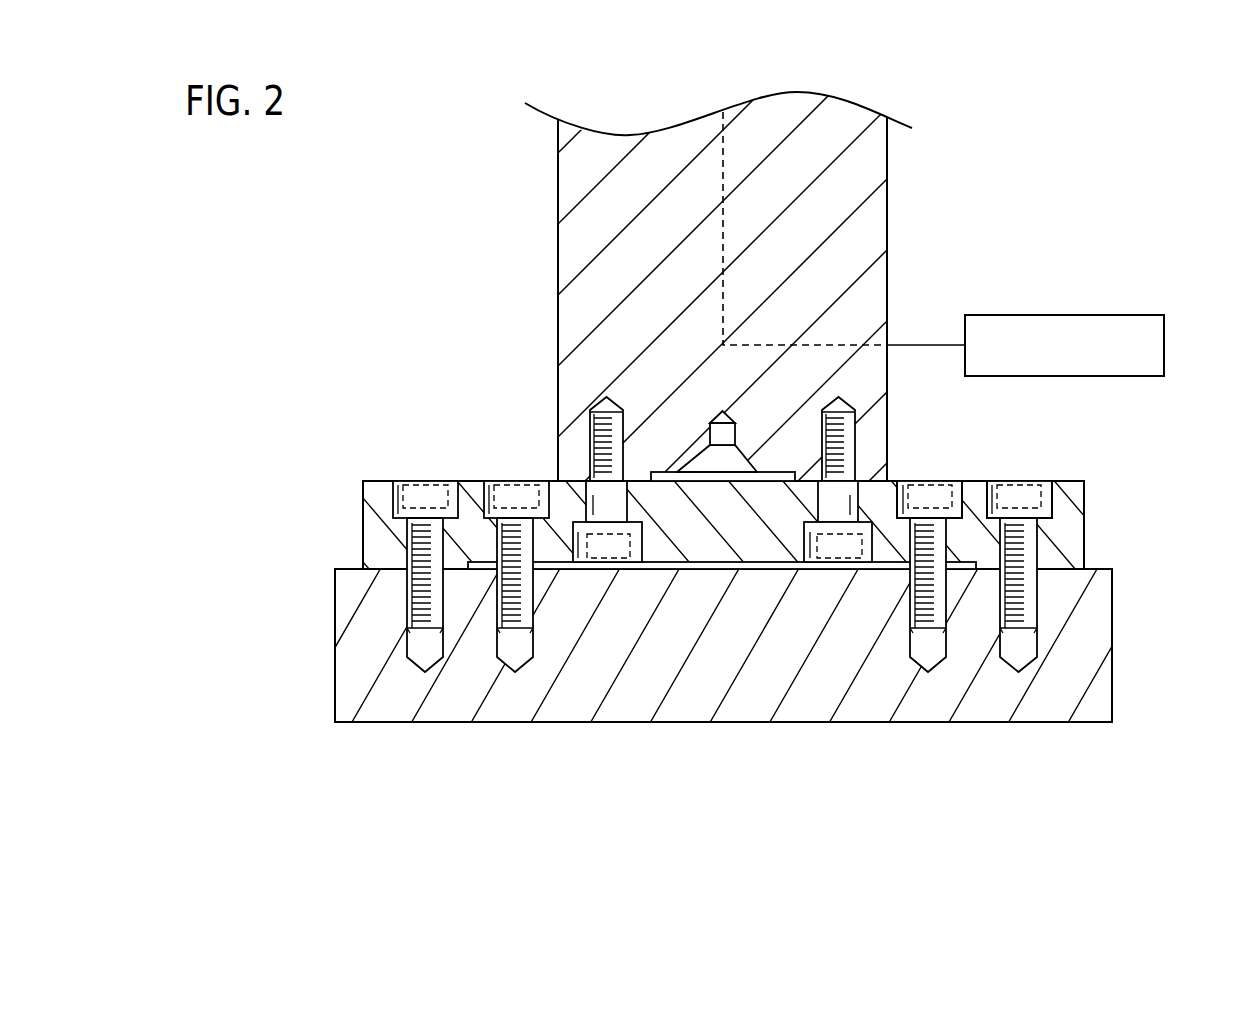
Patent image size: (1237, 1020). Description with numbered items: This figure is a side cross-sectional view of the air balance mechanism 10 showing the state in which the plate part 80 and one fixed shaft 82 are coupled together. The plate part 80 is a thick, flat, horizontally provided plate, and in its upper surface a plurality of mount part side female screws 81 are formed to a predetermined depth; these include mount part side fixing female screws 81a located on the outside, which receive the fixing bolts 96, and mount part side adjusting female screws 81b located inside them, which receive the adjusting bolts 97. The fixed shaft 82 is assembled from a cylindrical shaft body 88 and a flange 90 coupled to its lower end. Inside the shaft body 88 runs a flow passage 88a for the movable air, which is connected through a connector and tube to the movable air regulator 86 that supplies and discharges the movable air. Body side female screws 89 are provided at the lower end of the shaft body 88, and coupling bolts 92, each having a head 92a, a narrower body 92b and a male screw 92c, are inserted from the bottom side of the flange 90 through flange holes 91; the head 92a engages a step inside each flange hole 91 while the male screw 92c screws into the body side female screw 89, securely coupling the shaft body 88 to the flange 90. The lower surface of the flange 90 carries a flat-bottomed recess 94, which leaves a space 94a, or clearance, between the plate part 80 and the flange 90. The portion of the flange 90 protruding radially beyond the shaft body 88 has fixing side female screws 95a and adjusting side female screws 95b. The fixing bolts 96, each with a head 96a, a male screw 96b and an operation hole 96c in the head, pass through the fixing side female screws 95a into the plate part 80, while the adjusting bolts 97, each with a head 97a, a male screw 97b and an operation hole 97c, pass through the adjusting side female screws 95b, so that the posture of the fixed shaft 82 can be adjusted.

The air balance mechanism 10 is at (516, 189).
The plate part 80 is at (633, 697).
The mount part side female screws 81 is at (763, 607).
The mount part side fixing female screws 81a is at (425, 655).
The mount part side adjusting female screws 81b is at (515, 655).
The fixed shaft 82 is at (374, 305).
The movable air regulator 86 is at (1068, 315).
The shaft body 88 is at (558, 328).
The flow passage 88a is at (722, 162).
The body side female screws 89 is at (845, 434).
The flange 90 is at (383, 481).
The flange holes 91 is at (828, 500).
The coupling bolts 92 is at (496, 375).
The head 92a is at (595, 528).
The body 92b is at (600, 492).
The male screw 92c is at (603, 413).
The recess 94 is at (715, 565).
The space 94a is at (722, 680).
The fixing side female screws 95a is at (1043, 493).
The adjusting side female screws 95b is at (950, 493).
The fixing bolts 96 is at (415, 548).
The head 96a is at (1052, 515).
The male screw 96b is at (1030, 548).
The operation hole 96c is at (1010, 495).
The adjusting bolts 97 is at (525, 605).
The head 97a is at (904, 509).
The male screw 97b is at (925, 655).
The operation hole 97c is at (912, 495).